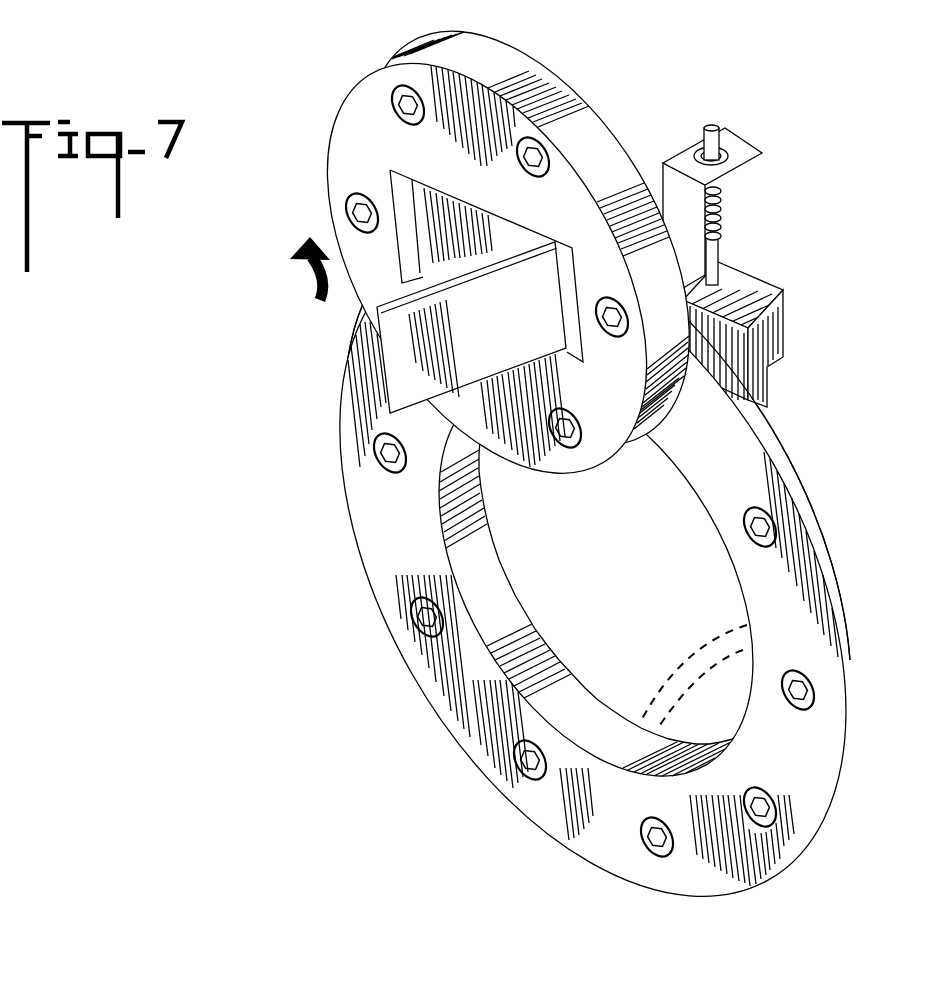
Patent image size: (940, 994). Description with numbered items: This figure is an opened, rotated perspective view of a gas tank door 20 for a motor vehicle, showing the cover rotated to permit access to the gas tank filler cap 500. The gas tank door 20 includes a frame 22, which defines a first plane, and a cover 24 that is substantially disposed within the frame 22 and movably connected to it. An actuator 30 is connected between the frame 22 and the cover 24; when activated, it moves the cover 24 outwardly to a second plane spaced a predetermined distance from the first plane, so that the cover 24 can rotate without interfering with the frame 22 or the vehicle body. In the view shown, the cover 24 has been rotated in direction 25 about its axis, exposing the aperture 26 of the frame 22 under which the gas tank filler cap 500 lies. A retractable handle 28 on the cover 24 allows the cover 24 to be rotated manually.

The gas tank door 20 is at (470, 497).
The frame 22 is at (470, 559).
The cover 24 is at (508, 269).
The direction 25 is at (312, 292).
The aperture 26 is at (615, 588).
The retractable handle 28 is at (483, 357).
The actuator 30 is at (756, 252).
The gas tank filler cap 500 is at (672, 670).